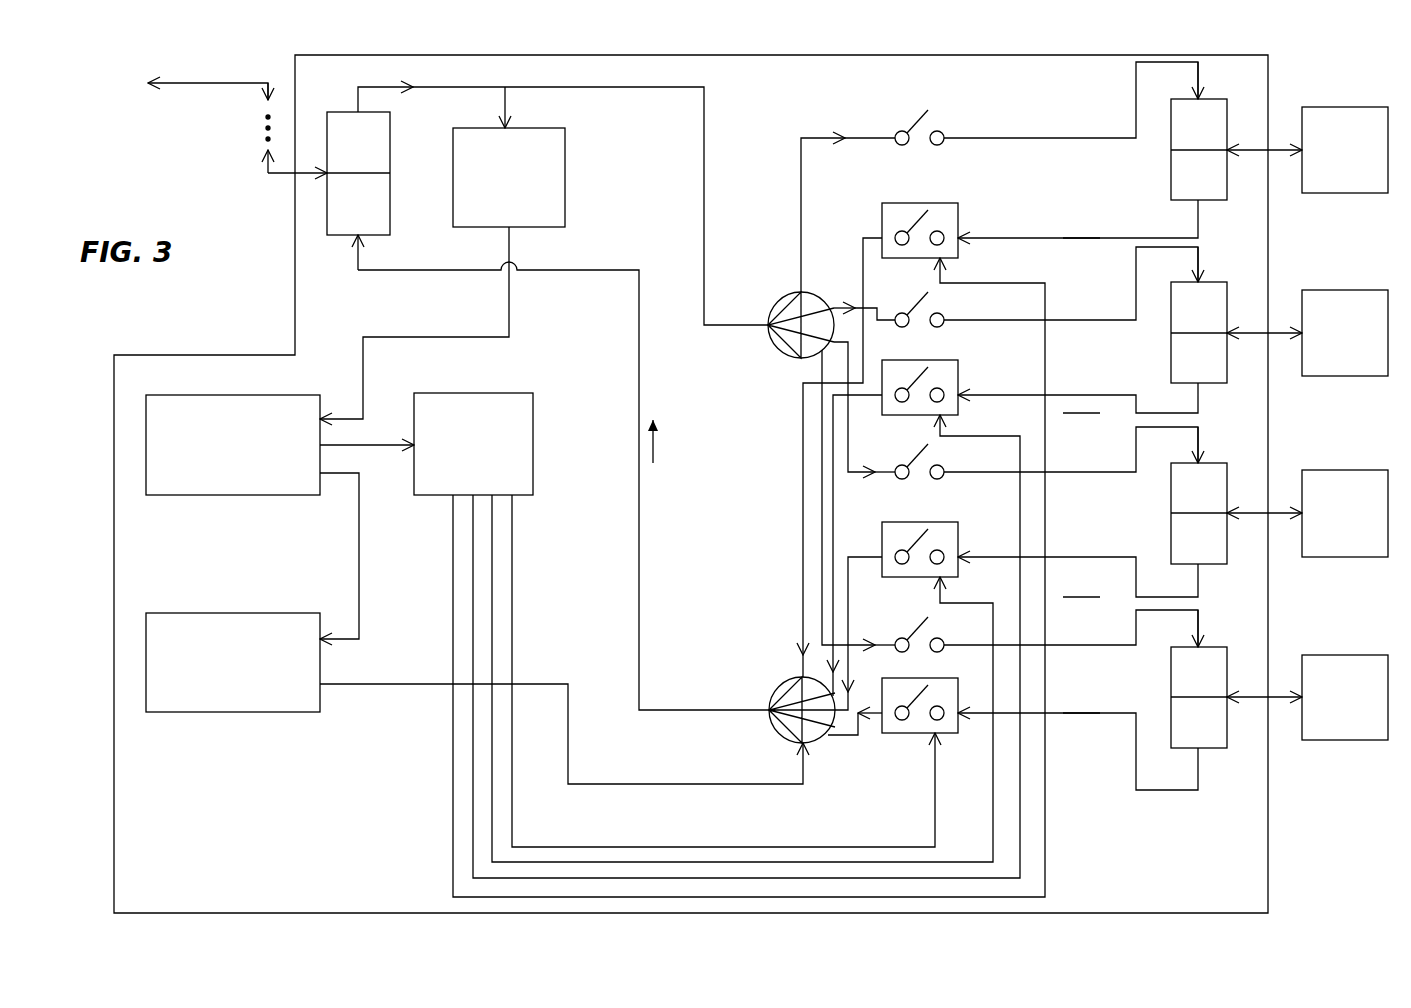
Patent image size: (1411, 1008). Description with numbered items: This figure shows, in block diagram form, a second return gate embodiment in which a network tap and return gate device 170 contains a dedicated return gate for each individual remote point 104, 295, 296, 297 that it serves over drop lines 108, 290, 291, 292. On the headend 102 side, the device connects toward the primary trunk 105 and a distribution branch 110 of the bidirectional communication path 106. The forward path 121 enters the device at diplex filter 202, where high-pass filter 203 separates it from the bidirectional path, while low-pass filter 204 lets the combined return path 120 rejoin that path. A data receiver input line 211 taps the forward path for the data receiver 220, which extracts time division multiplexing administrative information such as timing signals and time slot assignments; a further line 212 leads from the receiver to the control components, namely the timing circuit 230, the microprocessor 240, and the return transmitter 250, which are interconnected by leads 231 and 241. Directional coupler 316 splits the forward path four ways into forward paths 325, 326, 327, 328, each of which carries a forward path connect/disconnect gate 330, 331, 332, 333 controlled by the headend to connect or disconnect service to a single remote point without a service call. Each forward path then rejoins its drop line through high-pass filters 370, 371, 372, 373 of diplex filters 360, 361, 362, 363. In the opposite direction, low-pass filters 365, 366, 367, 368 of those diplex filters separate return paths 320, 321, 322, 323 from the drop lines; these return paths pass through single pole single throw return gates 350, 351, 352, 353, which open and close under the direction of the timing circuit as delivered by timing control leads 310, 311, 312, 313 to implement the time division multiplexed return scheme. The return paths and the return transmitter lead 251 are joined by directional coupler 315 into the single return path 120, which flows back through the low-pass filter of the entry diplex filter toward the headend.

The headend 102 is at (93, 116).
The remote point 104 is at (1345, 742).
The primary trunk 105 is at (220, 88).
The bidirectional communication path 106 is at (245, 160).
The drop line 108 is at (1278, 700).
The distribution branch 110 is at (272, 186).
The return path 120 is at (653, 440).
The forward path 121 is at (568, 78).
The network tap and return gate device 170 is at (295, 312).
The diplex filter 202 is at (320, 104).
The high-pass filter 203 is at (390, 145).
The low-pass filter 204 is at (390, 195).
The data receiver input line 211 is at (505, 100).
The data receiver output line 212 is at (509, 310).
The data receiver 220 is at (565, 195).
The timing circuit 230 is at (533, 397).
The microprocessor to timing circuit line 231 is at (375, 447).
The microprocessor 240 is at (160, 495).
The microprocessor to return transmitter line 241 is at (359, 560).
The return transmitter 250 is at (160, 712).
The return transmitter lead 251 is at (650, 784).
The drop line 290 is at (1278, 516).
The drop line 291 is at (1278, 336).
The drop line 292 is at (1278, 153).
The remote point 295 is at (1345, 559).
The remote point 296 is at (1345, 378).
The remote point 297 is at (1345, 195).
The timing control lead 310 is at (453, 570).
The timing control lead 311 is at (473, 600).
The timing control lead 312 is at (492, 618).
The timing control lead 313 is at (512, 562).
The directional coupler 315 is at (773, 691).
The directional coupler 316 is at (779, 303).
The return path 320 is at (1072, 716).
The return path 321 is at (1083, 593).
The return path 322 is at (1070, 415).
The return path 323 is at (1066, 240).
The forward path 325 is at (820, 371).
The forward path 326 is at (848, 425).
The forward path 327 is at (858, 292).
The forward path 328 is at (803, 180).
The forward path connect/disconnect gate 330 is at (936, 652).
The forward path connect/disconnect gate 331 is at (945, 478).
The forward path connect/disconnect gate 332 is at (946, 326).
The forward path connect/disconnect gate 333 is at (900, 130).
The return gate 350 is at (955, 735).
The return gate 351 is at (958, 528).
The return gate 352 is at (958, 372).
The return gate 353 is at (958, 208).
The diplex filter 360 is at (1158, 690).
The diplex filter 361 is at (1158, 512).
The diplex filter 362 is at (1158, 340).
The diplex filter 363 is at (1158, 160).
The low-pass filter 365 is at (1227, 727).
The low-pass filter 366 is at (1227, 545).
The low-pass filter 367 is at (1227, 365).
The low-pass filter 368 is at (1227, 183).
The high-pass filter 370 is at (1227, 662).
The high-pass filter 371 is at (1227, 482).
The high-pass filter 372 is at (1227, 300).
The high-pass filter 373 is at (1227, 115).